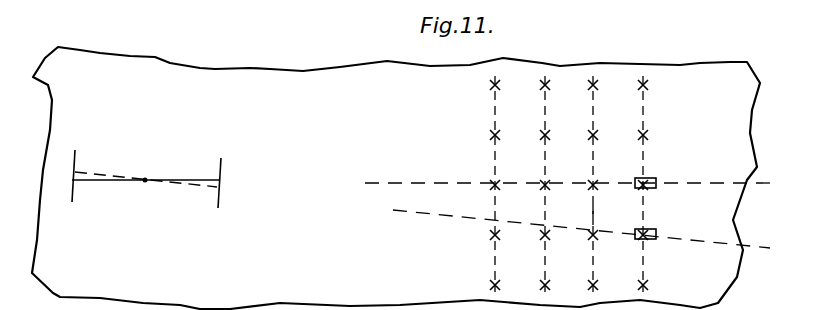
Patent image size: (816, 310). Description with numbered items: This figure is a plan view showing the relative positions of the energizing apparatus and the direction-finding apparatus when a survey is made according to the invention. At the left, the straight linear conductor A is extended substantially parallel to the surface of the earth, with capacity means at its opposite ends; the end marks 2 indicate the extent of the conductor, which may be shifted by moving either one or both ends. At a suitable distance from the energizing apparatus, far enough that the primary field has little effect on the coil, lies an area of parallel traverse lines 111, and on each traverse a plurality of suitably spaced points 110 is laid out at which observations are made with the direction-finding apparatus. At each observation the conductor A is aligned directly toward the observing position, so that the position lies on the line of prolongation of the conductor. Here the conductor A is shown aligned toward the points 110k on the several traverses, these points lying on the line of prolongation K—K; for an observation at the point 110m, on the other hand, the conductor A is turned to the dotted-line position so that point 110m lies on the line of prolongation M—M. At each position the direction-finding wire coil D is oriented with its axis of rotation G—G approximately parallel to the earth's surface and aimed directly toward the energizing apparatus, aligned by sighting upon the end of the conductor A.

The observation points 110 is at (596, 134).
The observation points on line of prolongation K—K 110k is at (604, 186).
The observation point on line of prolongation M—M 110m is at (648, 238).
The parallel traverse lines 111 is at (593, 217).
The section line 2 is at (72, 202).
The straight linear conductor A is at (187, 178).
The line of prolongation K— K is at (563, 185).
The line of prolongation M— M is at (577, 231).
The axis of rotation G— G is at (653, 187).
The wire coil D is at (708, 201).